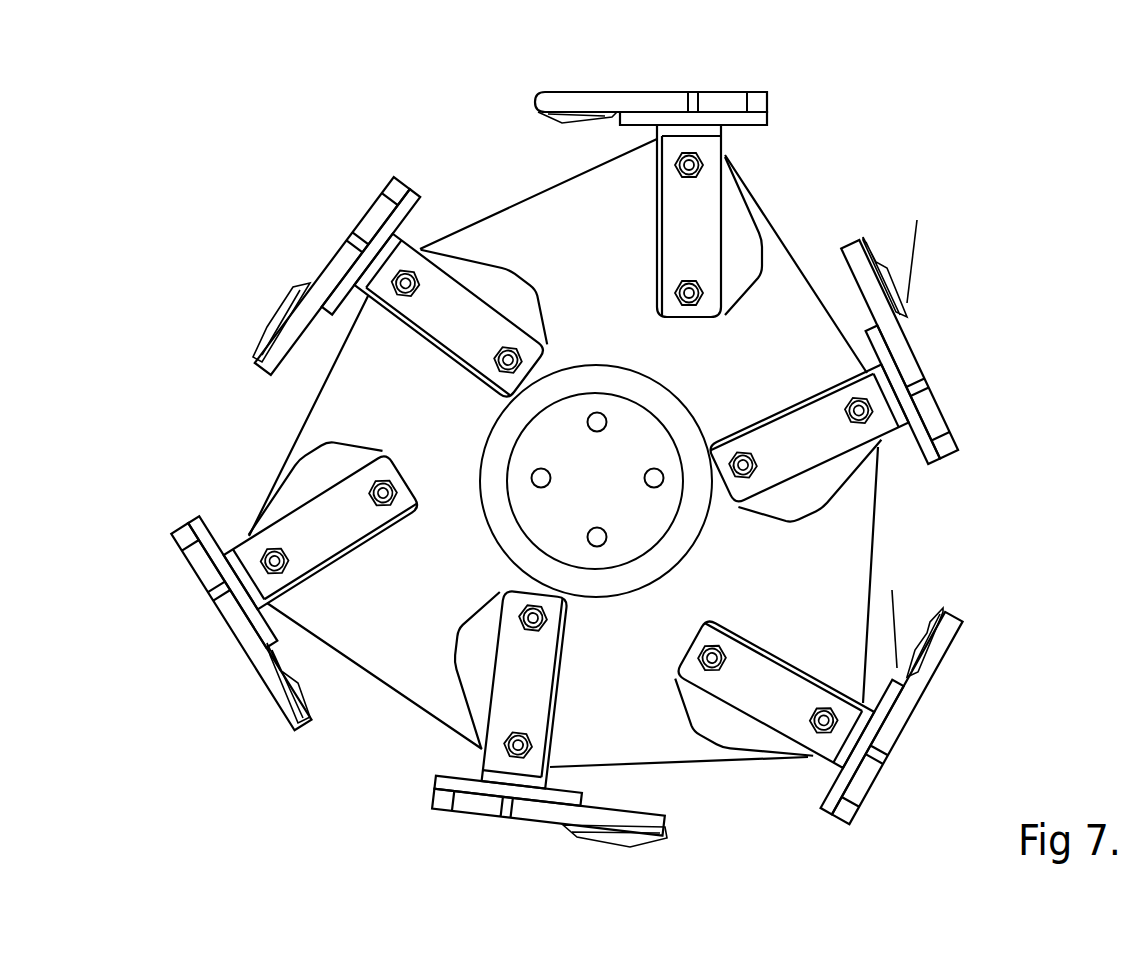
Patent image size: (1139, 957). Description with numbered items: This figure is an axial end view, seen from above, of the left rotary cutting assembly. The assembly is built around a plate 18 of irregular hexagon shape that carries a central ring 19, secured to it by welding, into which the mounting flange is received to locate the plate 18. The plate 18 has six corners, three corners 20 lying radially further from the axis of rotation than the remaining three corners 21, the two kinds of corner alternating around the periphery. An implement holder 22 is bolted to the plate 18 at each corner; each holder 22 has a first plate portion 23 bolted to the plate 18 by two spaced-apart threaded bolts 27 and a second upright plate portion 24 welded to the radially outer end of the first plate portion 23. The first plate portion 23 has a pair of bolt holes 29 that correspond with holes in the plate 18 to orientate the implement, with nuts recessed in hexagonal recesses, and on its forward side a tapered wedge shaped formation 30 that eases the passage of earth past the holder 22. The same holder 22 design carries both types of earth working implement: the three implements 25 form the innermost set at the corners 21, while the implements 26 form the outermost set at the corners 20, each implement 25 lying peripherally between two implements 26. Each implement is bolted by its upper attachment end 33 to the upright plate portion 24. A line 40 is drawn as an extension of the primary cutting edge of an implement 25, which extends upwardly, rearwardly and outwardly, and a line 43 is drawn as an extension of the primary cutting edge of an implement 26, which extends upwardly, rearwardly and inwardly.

The plate 18 is at (850, 548).
The central ring 19 is at (508, 540).
The corners 20 is at (738, 160).
The corners 21 is at (362, 297).
The implement holder 22 is at (769, 121).
The first plate portion 23 is at (682, 223).
The second upright plate portion 24 is at (722, 117).
The earth working implement 25 is at (368, 224).
The earth working implement 26 is at (640, 91).
The threaded bolts 27 is at (497, 362).
The bolt holes 29 is at (508, 348).
The tapered wedge shaped formation 30 is at (745, 240).
The upper attachment end 33 is at (768, 94).
The line 40 is at (917, 257).
The line 43 is at (895, 603).